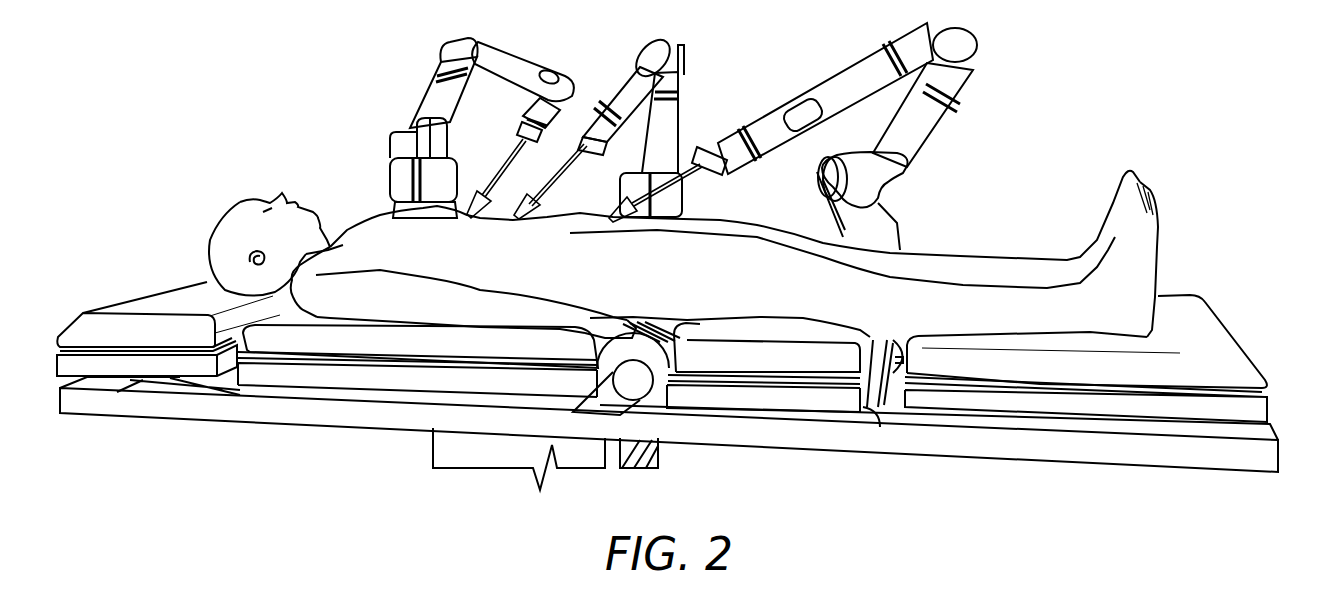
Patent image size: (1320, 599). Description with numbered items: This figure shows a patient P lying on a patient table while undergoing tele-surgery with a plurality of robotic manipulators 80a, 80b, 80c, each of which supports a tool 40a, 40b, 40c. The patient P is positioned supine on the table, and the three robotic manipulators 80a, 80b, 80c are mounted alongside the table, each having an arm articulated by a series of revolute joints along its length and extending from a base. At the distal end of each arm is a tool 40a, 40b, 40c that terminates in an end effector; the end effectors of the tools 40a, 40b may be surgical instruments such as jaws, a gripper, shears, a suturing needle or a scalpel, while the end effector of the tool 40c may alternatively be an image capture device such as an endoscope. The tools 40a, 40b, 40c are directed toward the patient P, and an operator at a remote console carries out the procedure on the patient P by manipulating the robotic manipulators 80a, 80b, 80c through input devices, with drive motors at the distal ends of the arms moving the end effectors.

The patient P is at (238, 204).
The robotic manipulator 80a is at (430, 96).
The robotic manipulator 80b is at (940, 132).
The robotic manipulator 80c is at (693, 62).
The tool 40a is at (498, 186).
The tool 40b is at (672, 218).
The tool 40c is at (553, 178).